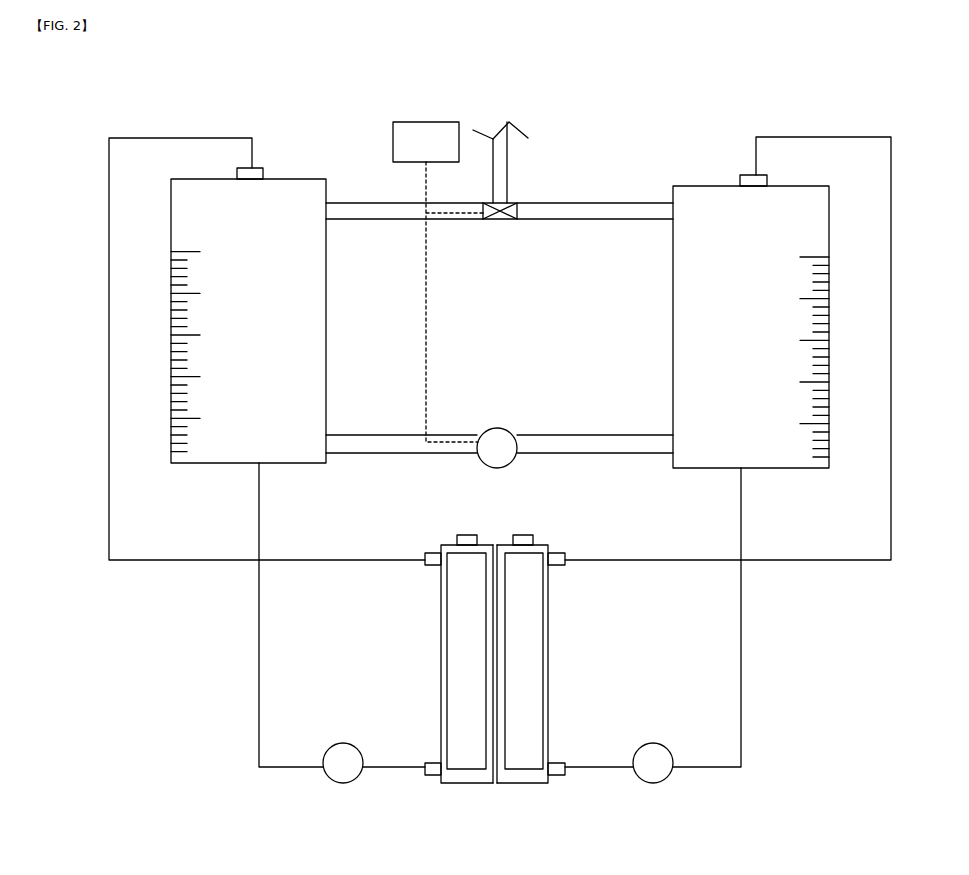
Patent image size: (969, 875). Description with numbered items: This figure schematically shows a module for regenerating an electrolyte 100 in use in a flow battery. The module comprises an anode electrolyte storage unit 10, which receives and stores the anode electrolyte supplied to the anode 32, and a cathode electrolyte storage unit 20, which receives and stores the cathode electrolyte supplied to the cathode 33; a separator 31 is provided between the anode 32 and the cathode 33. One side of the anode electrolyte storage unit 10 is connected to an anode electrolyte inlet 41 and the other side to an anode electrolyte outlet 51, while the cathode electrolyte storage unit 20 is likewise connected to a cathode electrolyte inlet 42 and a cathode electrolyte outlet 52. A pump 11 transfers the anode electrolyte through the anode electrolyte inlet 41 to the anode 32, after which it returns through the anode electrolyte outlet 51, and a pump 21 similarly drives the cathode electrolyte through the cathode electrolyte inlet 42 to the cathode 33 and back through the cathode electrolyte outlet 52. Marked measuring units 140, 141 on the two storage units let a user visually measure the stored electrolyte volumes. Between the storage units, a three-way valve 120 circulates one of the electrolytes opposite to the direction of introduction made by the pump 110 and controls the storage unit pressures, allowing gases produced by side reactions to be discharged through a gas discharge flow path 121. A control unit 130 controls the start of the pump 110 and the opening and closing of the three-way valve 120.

The module for regenerating an electrolyte 100 is at (136, 109).
The anode electrolyte storage unit 10 is at (327, 282).
The cathode electrolyte storage unit 20 is at (673, 301).
The measuring unit 140 is at (200, 335).
The measuring unit 141 is at (800, 340).
The control unit 130 is at (431, 122).
The gas discharge flow path 121 is at (510, 170).
The three-way valve 120 is at (492, 222).
The pump 110 is at (500, 428).
The pump 11 is at (343, 783).
The pump 21 is at (652, 783).
The separator 31 is at (495, 545).
The anode 32 is at (463, 786).
The cathode 33 is at (520, 786).
The anode electrolyte outlet 51 is at (440, 552).
The cathode electrolyte outlet 52 is at (563, 552).
The anode electrolyte inlet 41 is at (428, 778).
The cathode electrolyte inlet 42 is at (555, 778).